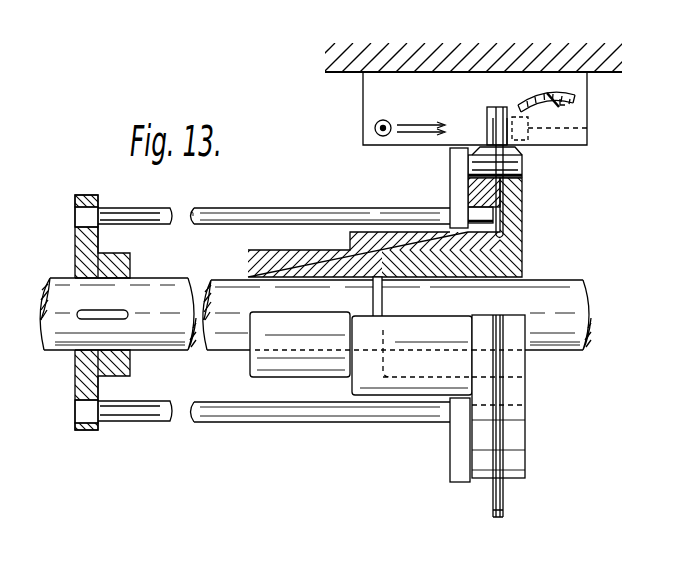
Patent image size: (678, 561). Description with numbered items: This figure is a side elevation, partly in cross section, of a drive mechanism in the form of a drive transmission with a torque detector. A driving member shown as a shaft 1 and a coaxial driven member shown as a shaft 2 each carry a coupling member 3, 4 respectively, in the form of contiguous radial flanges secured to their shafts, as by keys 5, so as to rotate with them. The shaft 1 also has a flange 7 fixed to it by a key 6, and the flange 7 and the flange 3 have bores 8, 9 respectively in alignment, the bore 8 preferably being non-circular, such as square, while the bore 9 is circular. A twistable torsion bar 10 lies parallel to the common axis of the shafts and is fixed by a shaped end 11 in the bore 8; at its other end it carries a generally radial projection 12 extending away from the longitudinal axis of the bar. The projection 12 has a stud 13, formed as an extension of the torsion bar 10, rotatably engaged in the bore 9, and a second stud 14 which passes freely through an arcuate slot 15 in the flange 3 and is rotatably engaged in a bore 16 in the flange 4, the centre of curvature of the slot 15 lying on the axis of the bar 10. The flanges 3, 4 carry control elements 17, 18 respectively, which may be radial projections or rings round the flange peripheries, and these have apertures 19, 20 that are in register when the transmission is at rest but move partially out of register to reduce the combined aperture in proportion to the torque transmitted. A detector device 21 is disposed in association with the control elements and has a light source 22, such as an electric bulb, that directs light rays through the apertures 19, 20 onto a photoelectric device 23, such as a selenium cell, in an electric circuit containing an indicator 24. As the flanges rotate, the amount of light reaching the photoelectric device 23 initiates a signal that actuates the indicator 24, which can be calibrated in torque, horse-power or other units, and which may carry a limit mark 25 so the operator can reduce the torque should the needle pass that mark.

The shaft 1 is at (222, 342).
The shaft 2 is at (566, 305).
The coupling member 3 is at (484, 433).
The coupling member 4 is at (517, 393).
The key 5 is at (353, 315).
The key 6 is at (113, 316).
The flange 7 is at (122, 262).
The bore 8 is at (90, 195).
The bore 9 is at (500, 250).
The torsion bar 10 is at (228, 208).
The shaped end 11 is at (96, 213).
The projection 12 is at (451, 185).
The stud 13 is at (487, 221).
The second stud 14 is at (506, 163).
The arcuate slot 15 is at (496, 205).
The bore 16 is at (506, 185).
The control element 17 is at (492, 112).
The control element 18 is at (499, 107).
The aperture 19 is at (493, 130).
The aperture 20 is at (506, 132).
The detector device 21 is at (473, 94).
The light source 22 is at (383, 136).
The photoelectric device 23 is at (587, 134).
The indicator 24 is at (547, 93).
The limit mark 25 is at (576, 100).